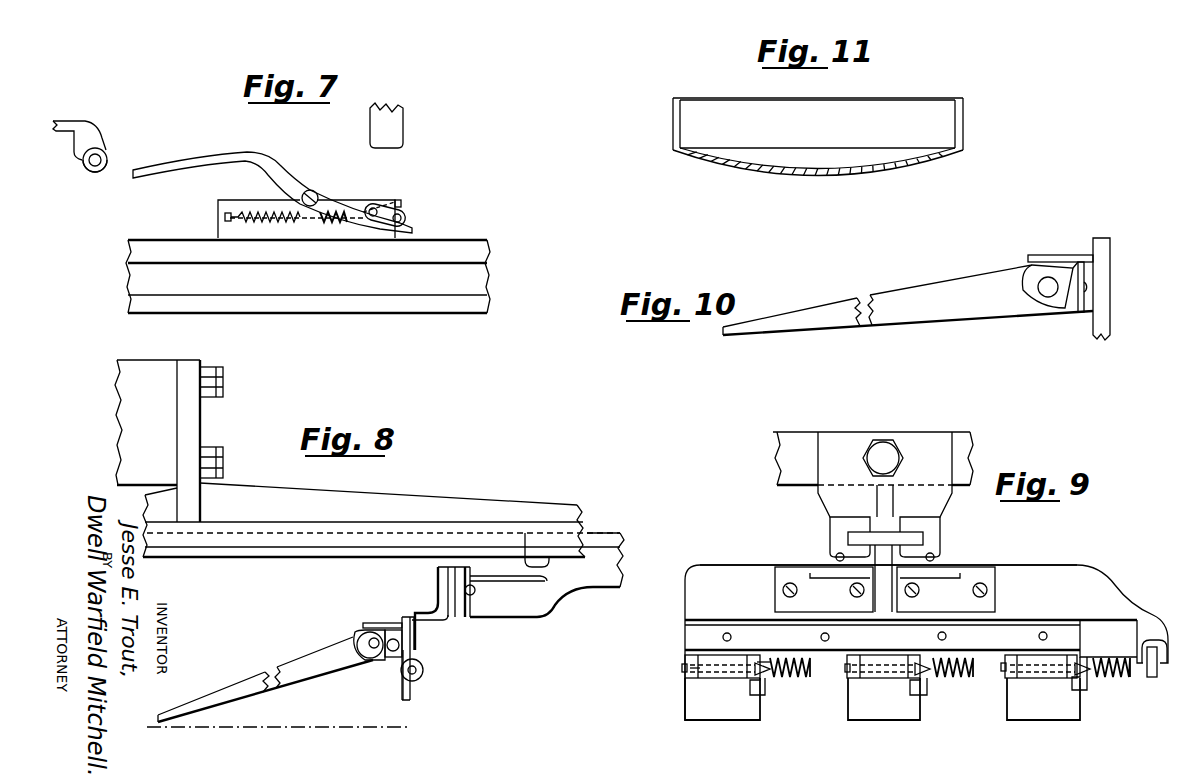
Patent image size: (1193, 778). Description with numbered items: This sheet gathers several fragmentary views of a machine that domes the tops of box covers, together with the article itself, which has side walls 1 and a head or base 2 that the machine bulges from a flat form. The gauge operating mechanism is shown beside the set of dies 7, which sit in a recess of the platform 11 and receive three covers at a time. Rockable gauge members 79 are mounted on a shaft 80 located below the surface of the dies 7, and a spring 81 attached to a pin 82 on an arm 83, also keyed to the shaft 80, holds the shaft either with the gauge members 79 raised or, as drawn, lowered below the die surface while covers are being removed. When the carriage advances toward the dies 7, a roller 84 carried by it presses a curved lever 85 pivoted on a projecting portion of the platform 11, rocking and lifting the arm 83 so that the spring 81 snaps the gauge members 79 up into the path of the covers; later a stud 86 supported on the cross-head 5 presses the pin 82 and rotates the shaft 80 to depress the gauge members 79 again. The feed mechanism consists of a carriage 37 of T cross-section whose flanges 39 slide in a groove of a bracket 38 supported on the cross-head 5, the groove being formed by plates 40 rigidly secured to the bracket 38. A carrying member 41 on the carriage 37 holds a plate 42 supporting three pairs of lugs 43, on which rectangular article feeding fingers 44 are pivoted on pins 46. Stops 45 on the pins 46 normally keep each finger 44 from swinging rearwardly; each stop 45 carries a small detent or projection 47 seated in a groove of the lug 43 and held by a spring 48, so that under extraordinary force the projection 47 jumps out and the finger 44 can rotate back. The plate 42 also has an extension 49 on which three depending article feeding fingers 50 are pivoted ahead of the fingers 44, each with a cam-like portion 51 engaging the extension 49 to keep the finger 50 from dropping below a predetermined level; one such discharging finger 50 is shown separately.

In FIG. 11, the side walls 1 is at (893, 102).
In FIG. 11, the head or base 2 is at (827, 176).
In FIG. 8, the cross-head 5 is at (150, 366).
In FIG. 9, the cross-head 5 is at (798, 432).
In FIG. 7, the dies 7 is at (218, 200).
In FIG. 7, the platform 11 is at (488, 252).
In FIG. 8, the carriage 37 is at (596, 590).
In FIG. 9, the carriage 37 is at (933, 562).
In FIG. 8, the bracket 38 is at (421, 497).
In FIG. 9, the bracket 38 is at (818, 505).
In FIG. 8, the flanges 39 is at (611, 534).
In FIG. 9, the flanges 39 is at (886, 533).
In FIG. 8, the plates 40 is at (266, 558).
In FIG. 9, the plates 40 is at (830, 550).
In FIG. 8, the carrying member 41 is at (470, 618).
In FIG. 9, the carrying member 41 is at (988, 570).
In FIG. 8, the plate 42 is at (447, 623).
In FIG. 9, the plate 42 is at (1070, 566).
In FIG. 10, the lugs 43 is at (1105, 237).
In FIG. 8, the lugs 43 is at (424, 669).
In FIG. 9, the lugs 43 is at (684, 673).
In FIG. 8, the article feeding fingers 44 is at (410, 706).
In FIG. 9, the article feeding fingers 44 is at (882, 699).
In FIG. 8, the stops 45 is at (412, 688).
In FIG. 9, the stops 45 is at (765, 697).
In FIG. 8, the pins 46 is at (413, 662).
In FIG. 9, the pins 46 is at (684, 664).
In FIG. 9, the detent or projection 47 is at (767, 681).
In FIG. 9, the spring 48 is at (803, 679).
In FIG. 10, the extension 49 is at (1078, 257).
In FIG. 8, the extension 49 is at (364, 625).
In FIG. 10, the article feeding fingers 50 is at (972, 320).
In FIG. 8, the article feeding fingers 50 is at (287, 665).
In FIG. 10, the cam-like portion 51 is at (1065, 313).
In FIG. 8, the cam-like portion 51 is at (373, 661).
In FIG. 7, the gauge members 79 is at (402, 200).
In FIG. 7, the shaft 80 is at (371, 208).
In FIG. 7, the spring 81 is at (262, 212).
In FIG. 7, the pin 82 is at (408, 218).
In FIG. 7, the arm 83 is at (404, 209).
In FIG. 7, the roller 84 is at (93, 173).
In FIG. 9, the roller 84 is at (1151, 678).
In FIG. 7, the curved lever 85 is at (205, 157).
In FIG. 7, the stud 86 is at (404, 124).